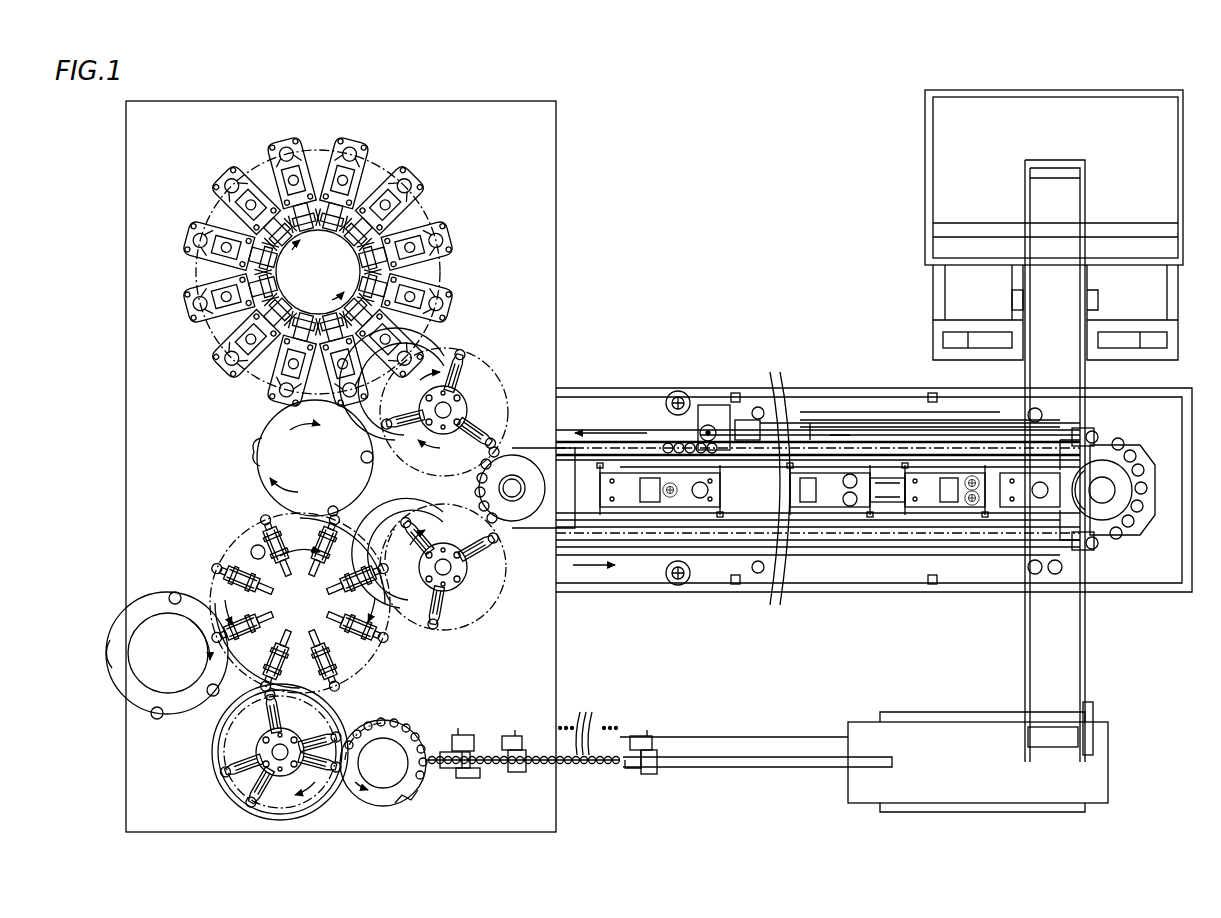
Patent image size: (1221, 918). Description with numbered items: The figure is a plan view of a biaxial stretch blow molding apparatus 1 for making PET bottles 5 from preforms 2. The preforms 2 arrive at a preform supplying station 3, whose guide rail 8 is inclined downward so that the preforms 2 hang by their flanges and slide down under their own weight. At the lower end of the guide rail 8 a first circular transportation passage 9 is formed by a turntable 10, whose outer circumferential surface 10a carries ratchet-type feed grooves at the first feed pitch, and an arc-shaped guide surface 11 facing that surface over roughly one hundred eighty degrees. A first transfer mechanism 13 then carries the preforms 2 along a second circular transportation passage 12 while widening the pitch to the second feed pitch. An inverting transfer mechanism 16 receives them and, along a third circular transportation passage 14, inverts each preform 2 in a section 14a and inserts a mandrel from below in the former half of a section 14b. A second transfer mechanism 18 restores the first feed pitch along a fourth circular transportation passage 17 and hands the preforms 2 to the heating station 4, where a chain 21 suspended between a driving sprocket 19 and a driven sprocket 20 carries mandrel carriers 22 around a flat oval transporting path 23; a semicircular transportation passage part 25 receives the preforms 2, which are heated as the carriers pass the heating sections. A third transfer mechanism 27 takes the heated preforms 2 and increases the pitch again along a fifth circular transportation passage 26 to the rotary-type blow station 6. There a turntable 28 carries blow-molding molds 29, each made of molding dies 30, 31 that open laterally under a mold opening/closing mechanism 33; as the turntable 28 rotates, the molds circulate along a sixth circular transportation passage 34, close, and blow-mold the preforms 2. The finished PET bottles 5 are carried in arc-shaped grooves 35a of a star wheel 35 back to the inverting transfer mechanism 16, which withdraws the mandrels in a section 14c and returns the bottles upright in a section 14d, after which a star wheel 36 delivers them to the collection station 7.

The biaxial stretch blow molding apparatus 1 is at (678, 208).
The preform 2 is at (524, 725).
The preform supplying station 3 is at (673, 716).
The heating station 4 is at (800, 356).
The PET bottle 5 is at (342, 512).
The rotary-type blow station 6 is at (484, 222).
The collection station 7 is at (135, 583).
The guide rail 8 is at (716, 752).
The first circular transportation passage 9 is at (405, 730).
The turntable 10 is at (407, 782).
The outer circumferential surface 10a is at (411, 794).
The arc-shaped guide surface 11 is at (394, 721).
The second circular transportation passage 12 is at (338, 704).
The first transfer mechanism 13 is at (208, 763).
The third circular transportation passage 14 is at (392, 622).
The section of third circular transportation passage 14a is at (368, 678).
The section of third circular transportation passage 14b is at (380, 600).
The section of third circular transportation passage 14c is at (250, 546).
The section of third circular transportation passage 14d is at (207, 590).
The inverting transfer mechanism 16 is at (252, 554).
The fourth circular transportation passage 17 is at (497, 600).
The second transfer mechanism 18 is at (516, 590).
The driving sprocket 19 is at (520, 465).
The driven sprocket 20 is at (1073, 545).
The chain 21 is at (1091, 548).
The mandrel carrier 22 is at (517, 456).
The transporting path 23 is at (903, 533).
The semicircular transportation passage part 25 is at (381, 546).
The fifth circular transportation passage 26 is at (478, 352).
The third transfer mechanism 27 is at (468, 380).
The turntable 28 is at (303, 270).
The blow-molding mold 29 is at (355, 160).
The molding die 30 is at (322, 408).
The molding die 31 is at (282, 388).
The mold opening/closing mechanism 33 is at (408, 226).
The sixth circular transportation passage 34 is at (447, 278).
The star wheel 35 is at (258, 448).
The arc-shaped groove 35a is at (246, 452).
The star wheel 36 is at (185, 598).